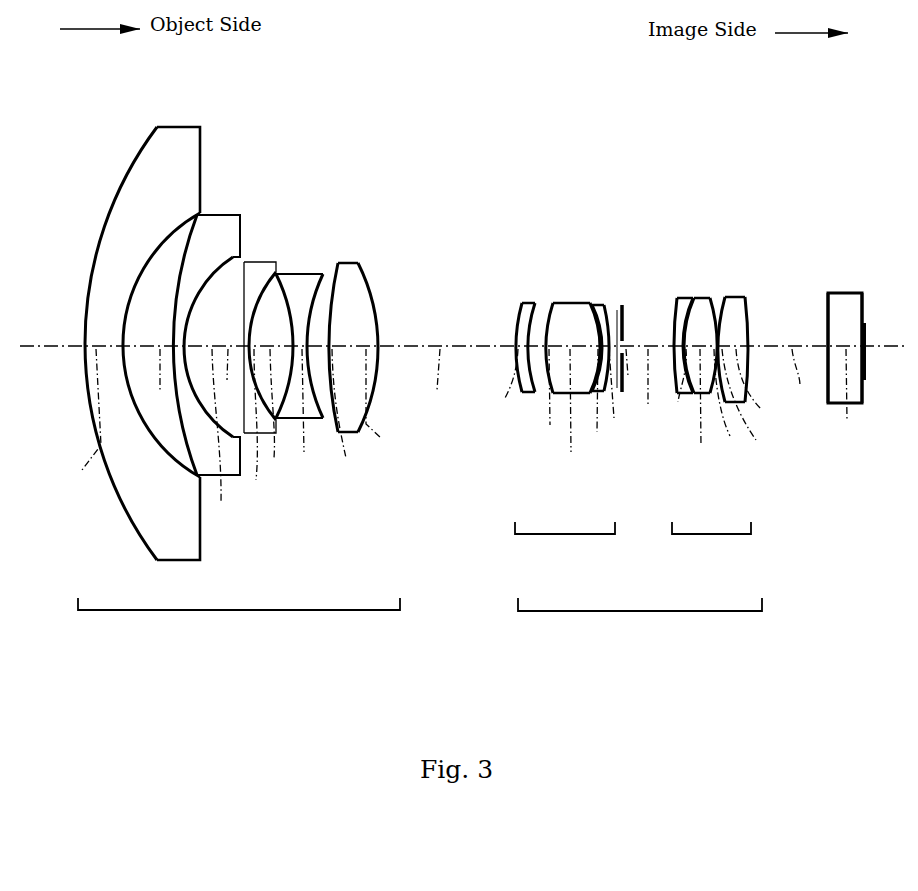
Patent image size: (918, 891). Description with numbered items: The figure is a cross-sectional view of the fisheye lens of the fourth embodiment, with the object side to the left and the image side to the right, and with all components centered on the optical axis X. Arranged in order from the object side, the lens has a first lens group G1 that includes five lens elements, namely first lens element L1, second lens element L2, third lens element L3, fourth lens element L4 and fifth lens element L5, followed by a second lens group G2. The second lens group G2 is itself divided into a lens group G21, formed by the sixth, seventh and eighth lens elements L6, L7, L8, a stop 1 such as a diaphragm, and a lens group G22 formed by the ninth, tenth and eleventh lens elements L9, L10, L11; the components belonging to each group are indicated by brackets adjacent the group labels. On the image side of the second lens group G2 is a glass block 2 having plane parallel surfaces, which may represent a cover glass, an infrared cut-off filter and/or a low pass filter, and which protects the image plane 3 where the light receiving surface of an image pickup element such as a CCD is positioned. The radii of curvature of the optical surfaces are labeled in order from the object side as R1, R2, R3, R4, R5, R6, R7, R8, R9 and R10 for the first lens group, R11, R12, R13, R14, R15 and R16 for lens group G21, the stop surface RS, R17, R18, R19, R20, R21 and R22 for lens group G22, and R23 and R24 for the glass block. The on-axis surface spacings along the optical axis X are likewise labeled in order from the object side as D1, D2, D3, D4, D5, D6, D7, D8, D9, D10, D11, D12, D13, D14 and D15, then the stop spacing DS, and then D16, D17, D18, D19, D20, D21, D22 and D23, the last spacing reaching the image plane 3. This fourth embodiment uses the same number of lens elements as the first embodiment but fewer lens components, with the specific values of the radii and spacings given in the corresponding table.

The optical axis X is at (38, 347).
The stop 1 is at (640, 301).
The glass block 2 is at (839, 300).
The image plane 3 is at (868, 328).
The first lens group G1 is at (239, 622).
The second lens group G2 is at (640, 622).
The lens group G21 is at (565, 546).
The lens group G22 is at (711, 546).
The first lens element L1 is at (153, 301).
The second lens element L2 is at (218, 297).
The third lens element L3 is at (253, 308).
The fourth lens element L4 is at (310, 295).
The fifth lens element L5 is at (381, 312).
The sixth lens element L6 is at (495, 308).
The seventh lens element L7 is at (560, 294).
The eighth lens element L8 is at (606, 292).
The ninth lens element L9 is at (659, 288).
The tenth lens element L10 is at (714, 288).
The eleventh lens element L11 is at (764, 309).
The radius of curvature R1 is at (136, 152).
The radius of curvature R2 is at (191, 212).
The radius of curvature R3 is at (216, 242).
The radius of curvature R4 is at (238, 262).
The radius of curvature R5 is at (240, 336).
The radius of curvature R6 is at (268, 282).
The radius of curvature R7 is at (284, 286).
The radius of curvature R8 is at (320, 292).
The radius of curvature R9 is at (360, 276).
The radius of curvature R10 is at (378, 304).
The radius of curvature R11 is at (520, 322).
The radius of curvature R12 is at (530, 312).
The radius of curvature R13 is at (554, 322).
The radius of curvature R14 is at (590, 318).
The radius of curvature R15 is at (600, 312).
The radius of curvature R16 is at (608, 304).
The stop surface RS is at (623, 332).
The radius of curvature R17 is at (676, 328).
The radius of curvature R18 is at (686, 310).
The radius of curvature R19 is at (694, 300).
The radius of curvature R20 is at (714, 314).
The radius of curvature R21 is at (738, 306).
The radius of curvature R22 is at (748, 332).
The radius of curvature R23 is at (828, 296).
The radius of curvature R24 is at (862, 292).
The on-axis surface spacing D1 is at (74, 420).
The on-axis surface spacing D2 is at (155, 383).
The on-axis surface spacing D3 is at (223, 442).
The on-axis surface spacing D4 is at (218, 378).
The on-axis surface spacing D5 is at (255, 429).
The on-axis surface spacing D6 is at (282, 417).
The on-axis surface spacing D7 is at (312, 414).
The on-axis surface spacing D8 is at (353, 417).
The on-axis surface spacing D9 is at (388, 406).
The on-axis surface spacing D10 is at (434, 384).
The on-axis surface spacing D11 is at (496, 387).
The on-axis surface spacing D12 is at (538, 401).
The on-axis surface spacing D13 is at (574, 415).
The on-axis surface spacing D14 is at (591, 405).
The on-axis surface spacing D15 is at (624, 398).
The on-axis spacing at the stop DS is at (644, 376).
The on-axis surface spacing D16 is at (644, 392).
The on-axis surface spacing D17 is at (679, 390).
The on-axis surface spacing D18 is at (694, 412).
The on-axis surface spacing D19 is at (733, 407).
The on-axis surface spacing D20 is at (763, 408).
The on-axis surface spacing D21 is at (770, 391).
The on-axis surface spacing D22 is at (794, 382).
The on-axis surface spacing D23 is at (843, 400).